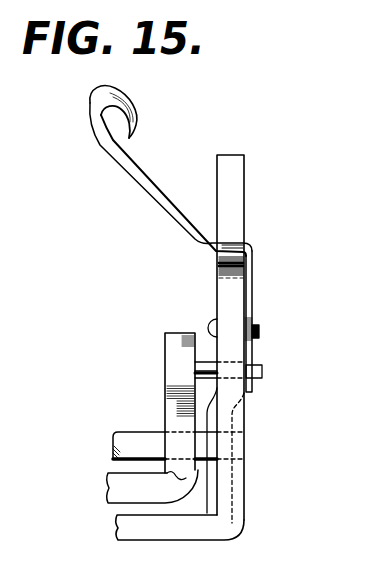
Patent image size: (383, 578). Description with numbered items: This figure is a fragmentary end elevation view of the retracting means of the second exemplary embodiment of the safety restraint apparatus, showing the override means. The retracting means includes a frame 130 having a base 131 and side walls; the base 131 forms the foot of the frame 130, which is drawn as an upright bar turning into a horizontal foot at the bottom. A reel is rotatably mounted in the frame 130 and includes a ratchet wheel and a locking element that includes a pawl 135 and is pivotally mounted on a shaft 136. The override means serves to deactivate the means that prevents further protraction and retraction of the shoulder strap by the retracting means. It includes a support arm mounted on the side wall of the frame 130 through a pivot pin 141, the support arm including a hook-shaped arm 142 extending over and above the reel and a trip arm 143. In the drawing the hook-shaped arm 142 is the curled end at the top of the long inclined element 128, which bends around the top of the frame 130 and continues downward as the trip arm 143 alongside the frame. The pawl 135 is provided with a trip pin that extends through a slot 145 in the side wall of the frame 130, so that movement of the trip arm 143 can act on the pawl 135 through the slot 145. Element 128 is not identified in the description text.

The spring arm 128 is at (162, 198).
The frame 130 is at (217, 298).
The base 131 is at (140, 527).
The pawl 135 is at (175, 370).
The shaft 136 is at (143, 443).
The pivot pin 141 is at (272, 316).
The hook-shaped arm 142 is at (135, 122).
The trip arm 143 is at (252, 290).
The slot 145 is at (235, 357).